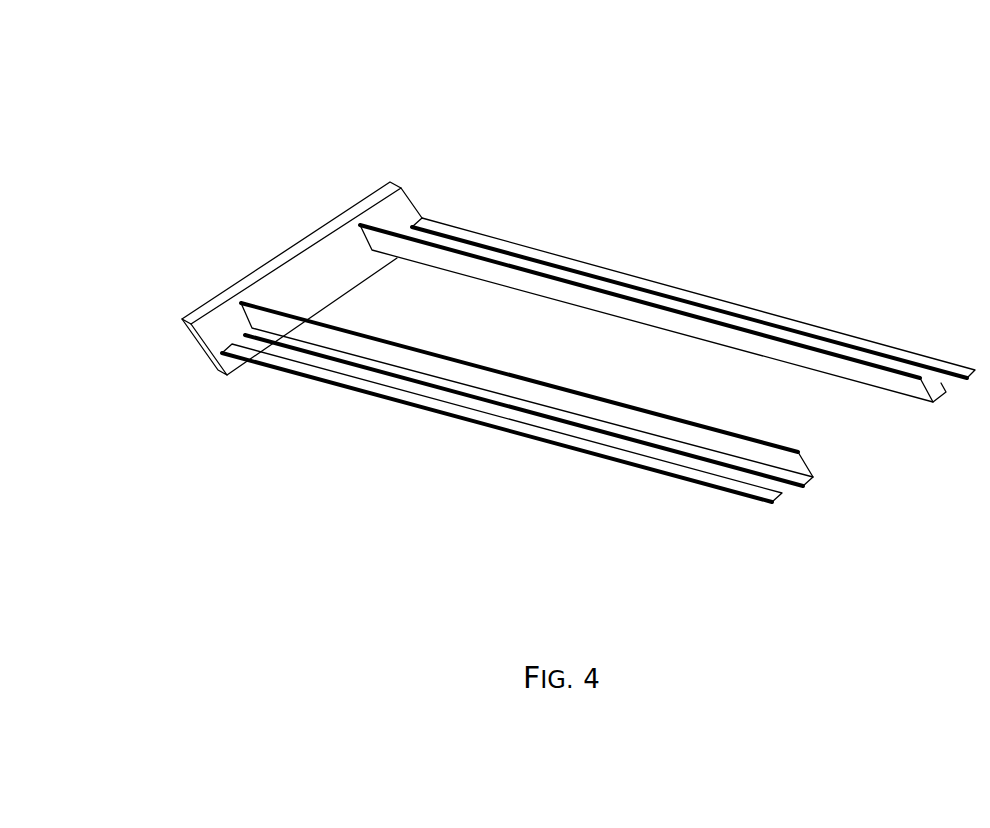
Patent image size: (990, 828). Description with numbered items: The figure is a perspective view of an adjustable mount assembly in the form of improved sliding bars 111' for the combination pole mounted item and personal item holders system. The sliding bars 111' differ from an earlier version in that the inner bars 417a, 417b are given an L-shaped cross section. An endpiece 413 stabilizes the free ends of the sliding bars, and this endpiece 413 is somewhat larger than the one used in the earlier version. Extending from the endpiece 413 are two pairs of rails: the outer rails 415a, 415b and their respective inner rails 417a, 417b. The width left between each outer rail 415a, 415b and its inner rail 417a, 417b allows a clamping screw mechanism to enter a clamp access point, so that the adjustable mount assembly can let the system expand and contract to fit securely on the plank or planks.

The improved sliding bars 111' is at (534, 278).
The endpiece 413 is at (267, 262).
The outer rail 415a is at (447, 418).
The outer rail 415b is at (663, 283).
The inner bar 417a is at (538, 383).
The inner bar 417b is at (870, 383).